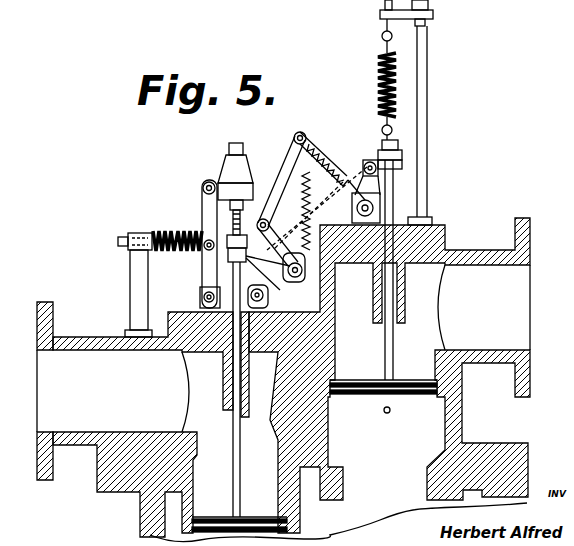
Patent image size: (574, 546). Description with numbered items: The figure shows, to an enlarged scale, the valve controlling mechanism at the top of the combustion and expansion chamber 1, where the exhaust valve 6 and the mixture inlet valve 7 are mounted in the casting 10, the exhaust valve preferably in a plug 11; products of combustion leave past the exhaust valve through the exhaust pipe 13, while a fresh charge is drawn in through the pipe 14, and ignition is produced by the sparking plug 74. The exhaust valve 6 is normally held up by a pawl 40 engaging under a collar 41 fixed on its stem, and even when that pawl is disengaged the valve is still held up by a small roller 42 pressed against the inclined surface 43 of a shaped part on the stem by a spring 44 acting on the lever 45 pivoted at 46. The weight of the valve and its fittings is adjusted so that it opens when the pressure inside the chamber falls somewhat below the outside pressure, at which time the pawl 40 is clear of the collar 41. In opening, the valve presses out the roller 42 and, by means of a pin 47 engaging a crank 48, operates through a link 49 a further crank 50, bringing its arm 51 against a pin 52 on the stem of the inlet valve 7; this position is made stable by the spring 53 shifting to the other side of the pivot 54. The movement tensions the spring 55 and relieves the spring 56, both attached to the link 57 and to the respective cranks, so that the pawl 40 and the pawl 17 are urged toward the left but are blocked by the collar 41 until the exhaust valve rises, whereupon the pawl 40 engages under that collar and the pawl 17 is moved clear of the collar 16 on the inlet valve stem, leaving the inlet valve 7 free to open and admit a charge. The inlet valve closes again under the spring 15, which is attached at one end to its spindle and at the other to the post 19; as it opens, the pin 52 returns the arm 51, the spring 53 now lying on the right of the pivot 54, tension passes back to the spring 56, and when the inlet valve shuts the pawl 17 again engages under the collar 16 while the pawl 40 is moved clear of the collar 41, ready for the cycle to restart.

The combustion and expansion chamber 1 is at (283, 380).
The exhaust valve 6 is at (215, 517).
The mixture inlet valve 7 is at (412, 380).
The casting 10 is at (97, 458).
The plug 11 is at (208, 352).
The exhaust pipe 13 is at (81, 391).
The pipe 14 is at (483, 314).
The spring 15 is at (377, 80).
The collar 16 is at (400, 148).
The pawl 17 is at (398, 190).
The post 19 is at (425, 105).
The pawl 40 is at (250, 282).
The collar 41 is at (230, 250).
The roller 42 is at (204, 184).
The inclined surface 43 is at (207, 205).
The spring 44 is at (152, 235).
The lever 45 is at (207, 218).
The pivot 46 is at (204, 297).
The pin 47 is at (230, 257).
The crank 48 is at (280, 262).
The link 49 is at (287, 155).
The crank 50 is at (322, 153).
The arm 51 is at (345, 180).
The pin 52 is at (398, 165).
The spring 53 is at (308, 146).
The pivot 54 is at (299, 211).
The spring 55 is at (307, 247).
The spring 56 is at (285, 200).
The link 57 is at (292, 208).
The sparking plug 74 is at (386, 413).